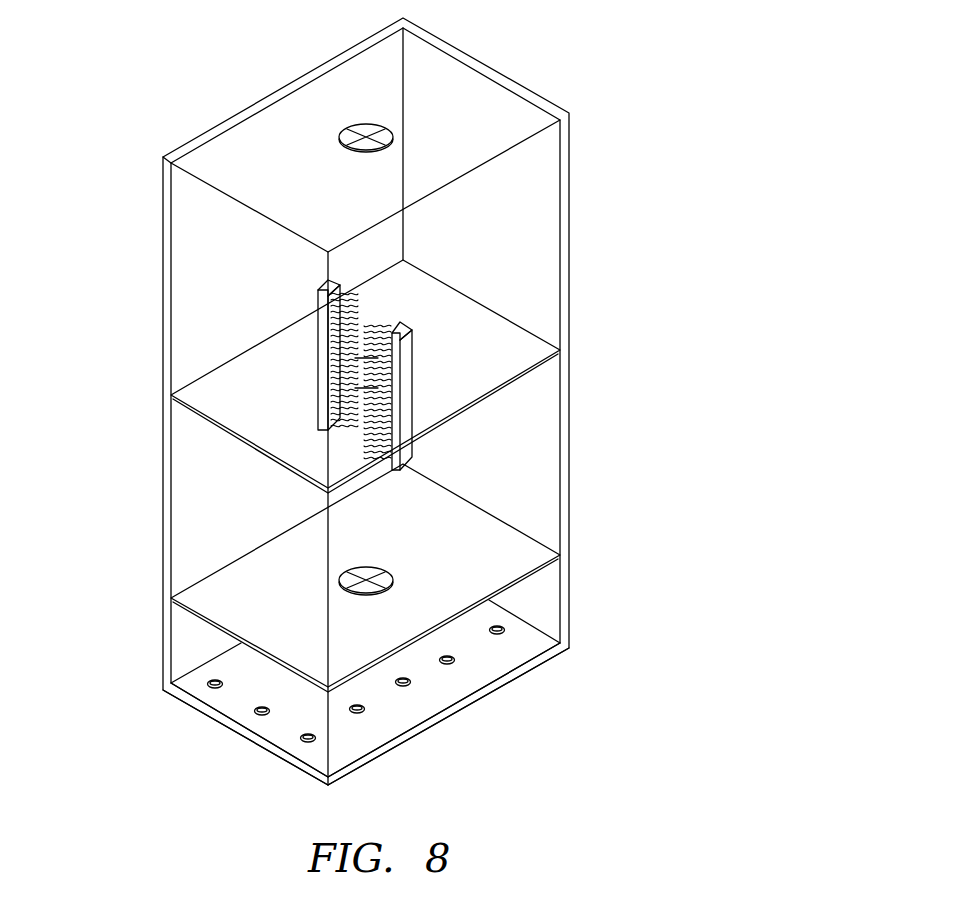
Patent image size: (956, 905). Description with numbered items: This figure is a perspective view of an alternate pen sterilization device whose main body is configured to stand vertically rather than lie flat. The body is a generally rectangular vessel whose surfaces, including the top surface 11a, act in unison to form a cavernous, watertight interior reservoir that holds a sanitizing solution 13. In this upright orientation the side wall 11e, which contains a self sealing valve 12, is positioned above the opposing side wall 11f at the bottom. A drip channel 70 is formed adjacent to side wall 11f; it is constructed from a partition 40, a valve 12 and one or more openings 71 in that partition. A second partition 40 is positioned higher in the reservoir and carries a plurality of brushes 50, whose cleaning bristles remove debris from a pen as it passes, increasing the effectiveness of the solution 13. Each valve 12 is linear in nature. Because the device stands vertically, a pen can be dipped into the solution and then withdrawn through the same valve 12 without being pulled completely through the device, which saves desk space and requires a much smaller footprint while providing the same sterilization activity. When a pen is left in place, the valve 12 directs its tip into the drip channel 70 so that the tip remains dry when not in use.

The top surface 11a is at (163, 270).
The side surface 11e is at (237, 140).
The side surface 11f is at (531, 670).
The self sealing valve 12 is at (367, 126).
The sanitizing solution 13 is at (510, 202).
The partition 40 is at (269, 409).
The brush 50 is at (413, 353).
The drip channel 70 is at (453, 699).
The opening 71 is at (258, 715).